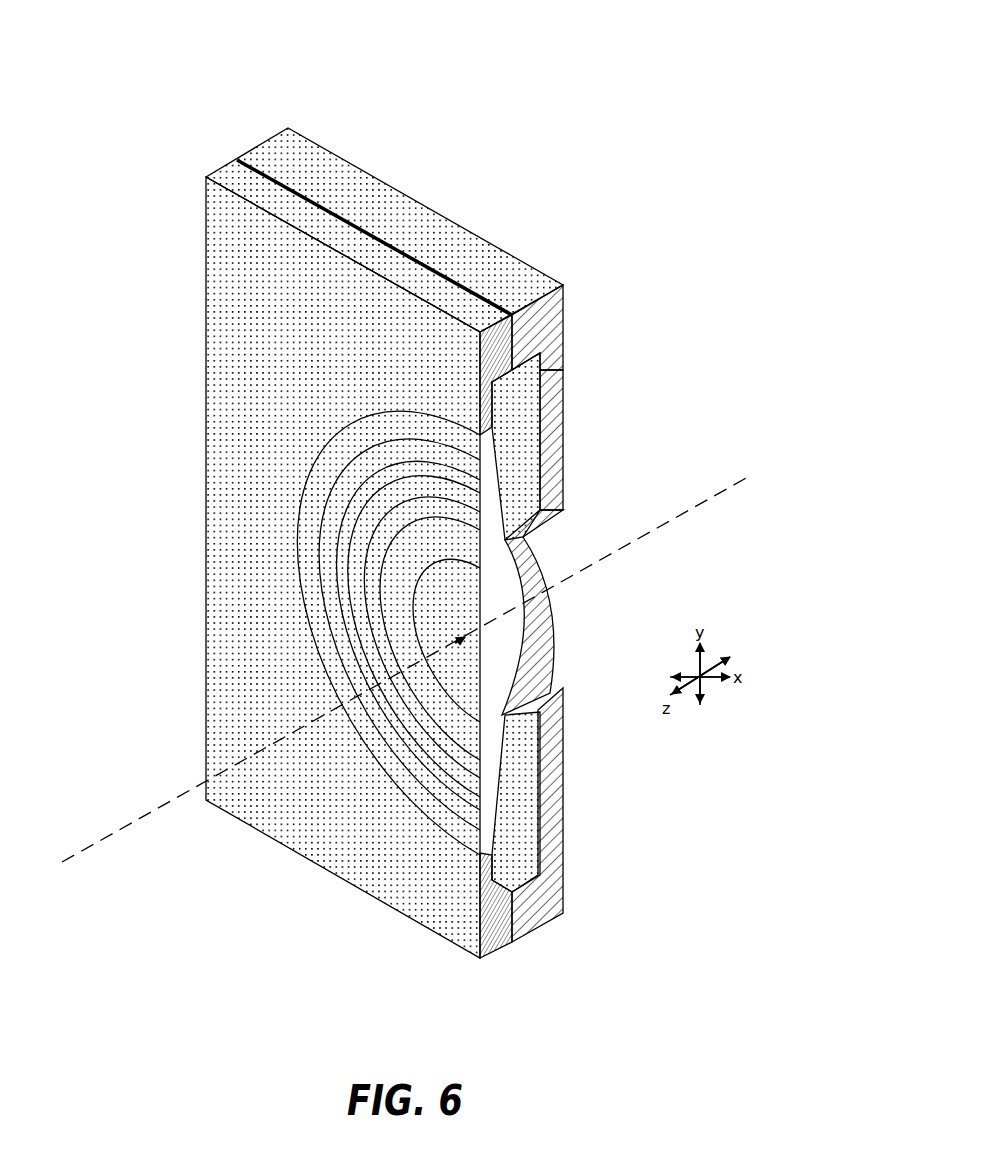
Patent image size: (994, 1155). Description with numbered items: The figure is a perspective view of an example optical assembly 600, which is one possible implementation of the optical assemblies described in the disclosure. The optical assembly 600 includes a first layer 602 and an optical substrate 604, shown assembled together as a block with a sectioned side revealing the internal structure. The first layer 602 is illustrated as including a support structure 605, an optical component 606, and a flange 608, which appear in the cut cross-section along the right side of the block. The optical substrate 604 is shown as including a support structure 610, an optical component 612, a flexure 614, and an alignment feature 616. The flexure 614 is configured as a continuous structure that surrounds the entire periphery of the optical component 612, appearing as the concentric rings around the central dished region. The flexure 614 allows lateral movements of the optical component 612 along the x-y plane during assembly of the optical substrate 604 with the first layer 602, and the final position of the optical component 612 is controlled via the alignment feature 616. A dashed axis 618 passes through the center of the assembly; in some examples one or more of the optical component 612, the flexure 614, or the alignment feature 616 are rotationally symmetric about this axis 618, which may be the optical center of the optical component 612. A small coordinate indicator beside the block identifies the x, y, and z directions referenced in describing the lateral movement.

The optical assembly 600 is at (740, 75).
The first layer 602 is at (389, 200).
The optical substrate 604 is at (260, 188).
The support structure 605 is at (548, 329).
The optical component 606 is at (548, 601).
The flange 608 is at (556, 415).
The support structure 610 is at (445, 340).
The optical component 612 is at (470, 622).
The flexure 614 is at (392, 468).
The alignment feature 616 is at (478, 547).
The axis 618 is at (730, 487).